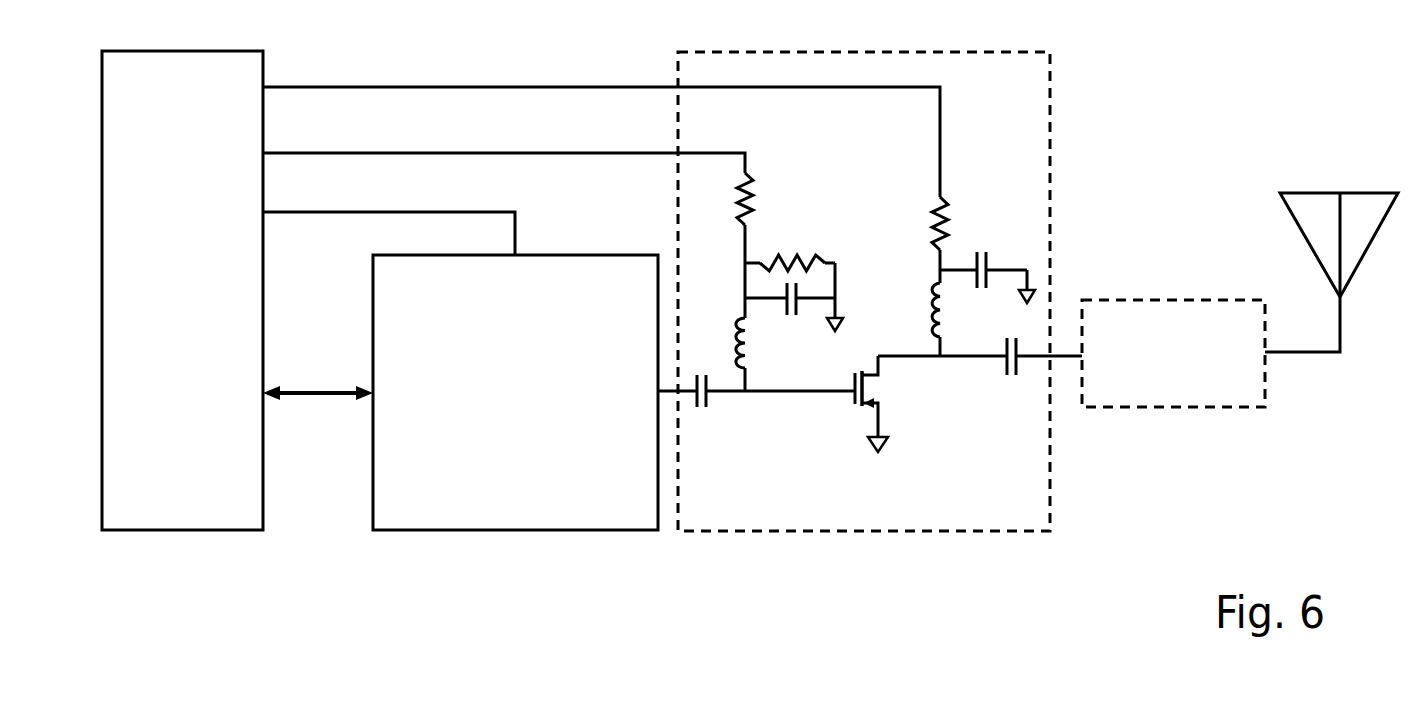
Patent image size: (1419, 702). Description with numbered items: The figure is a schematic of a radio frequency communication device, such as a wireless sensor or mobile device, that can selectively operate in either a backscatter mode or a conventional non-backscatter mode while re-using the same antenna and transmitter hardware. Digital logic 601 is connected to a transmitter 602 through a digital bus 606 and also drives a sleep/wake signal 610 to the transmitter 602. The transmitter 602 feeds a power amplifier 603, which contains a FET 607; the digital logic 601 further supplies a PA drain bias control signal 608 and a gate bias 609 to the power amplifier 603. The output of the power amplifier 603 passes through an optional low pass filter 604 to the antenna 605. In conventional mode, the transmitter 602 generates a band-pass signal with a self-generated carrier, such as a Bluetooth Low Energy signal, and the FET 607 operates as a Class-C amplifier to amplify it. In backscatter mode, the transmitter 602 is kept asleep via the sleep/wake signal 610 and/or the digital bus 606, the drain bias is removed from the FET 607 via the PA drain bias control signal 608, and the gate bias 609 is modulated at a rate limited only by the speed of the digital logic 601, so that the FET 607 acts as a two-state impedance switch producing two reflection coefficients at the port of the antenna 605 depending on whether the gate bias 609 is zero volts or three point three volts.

The digital logic 601 is at (197, 306).
The transmitter 602 is at (515, 413).
The power amplifier 603 is at (870, 309).
The low pass filter (optional) 604 is at (1173, 373).
The antenna 605 is at (1335, 272).
The digital bus 606 is at (318, 359).
The FET 607 is at (855, 404).
The PA drain bias control signal 608 is at (601, 120).
The gate bias 609 is at (504, 140).
The sleep/wake signal 610 is at (416, 211).